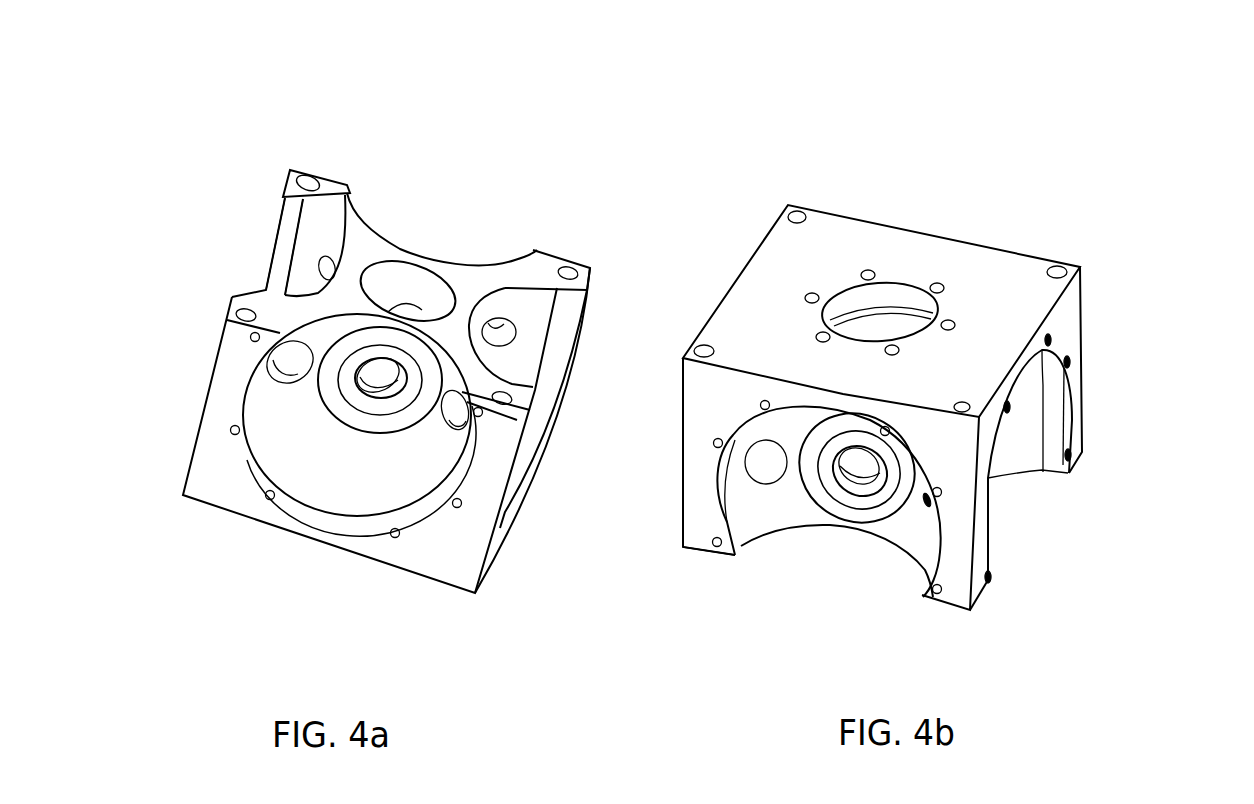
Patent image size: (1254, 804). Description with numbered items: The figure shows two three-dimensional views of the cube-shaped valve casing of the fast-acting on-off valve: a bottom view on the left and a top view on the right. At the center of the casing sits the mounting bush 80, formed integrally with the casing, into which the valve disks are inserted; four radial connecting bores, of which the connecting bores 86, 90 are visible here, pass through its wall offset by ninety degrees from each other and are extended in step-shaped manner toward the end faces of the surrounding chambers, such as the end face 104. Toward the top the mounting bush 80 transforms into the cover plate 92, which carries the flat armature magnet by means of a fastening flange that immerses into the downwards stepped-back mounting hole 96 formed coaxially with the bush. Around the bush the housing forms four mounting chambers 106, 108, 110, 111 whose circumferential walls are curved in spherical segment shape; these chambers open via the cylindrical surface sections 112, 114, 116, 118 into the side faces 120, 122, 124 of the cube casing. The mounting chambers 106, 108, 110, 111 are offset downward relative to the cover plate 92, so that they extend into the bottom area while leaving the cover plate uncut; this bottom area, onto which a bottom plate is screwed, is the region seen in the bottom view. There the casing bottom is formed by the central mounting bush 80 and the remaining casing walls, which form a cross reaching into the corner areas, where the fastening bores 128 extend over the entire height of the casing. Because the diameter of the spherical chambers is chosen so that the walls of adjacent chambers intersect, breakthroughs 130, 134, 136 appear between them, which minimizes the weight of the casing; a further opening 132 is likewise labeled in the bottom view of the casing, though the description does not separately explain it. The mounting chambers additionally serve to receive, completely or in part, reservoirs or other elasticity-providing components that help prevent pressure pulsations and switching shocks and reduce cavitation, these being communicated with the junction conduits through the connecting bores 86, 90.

In FIG. 4a, the mounting bush 80 is at (440, 267).
In FIG. 4b, the connecting bore 86 is at (867, 488).
In FIG. 4a, the connecting bore 90 is at (372, 395).
In FIG. 4b, the cover plate 92 is at (988, 280).
In FIG. 4b, the mounting hole 96 is at (887, 293).
In FIG. 4b, the end face 104 is at (827, 500).
In FIG. 4a, the mounting chamber 106 is at (436, 222).
In FIG. 4b, the mounting chamber 106 is at (834, 556).
In FIG. 4a, the mounting chamber 108 is at (534, 333).
In FIG. 4b, the mounting chamber 108 is at (1022, 463).
In FIG. 4a, the mounting chamber 110 is at (305, 425).
In FIG. 4a, the mounting chamber 111 is at (298, 272).
In FIG. 4b, the cylindrical surface section 112 is at (712, 522).
In FIG. 4b, the cylindrical surface section 114 is at (1058, 430).
In FIG. 4a, the cylindrical surface section 116 is at (350, 517).
In FIG. 4a, the cylindrical surface section 118 is at (288, 230).
In FIG. 4b, the side face 120 is at (702, 466).
In FIG. 4b, the side face 122 is at (1065, 313).
In FIG. 4b, the side face 124 is at (847, 228).
In FIG. 4a, the fastening bore 128 is at (299, 170).
In FIG. 4b, the fastening bore 128 is at (795, 210).
In FIG. 4a, the breakthrough 130 is at (333, 257).
In FIG. 4b, the breakthrough 130 is at (762, 480).
In FIG. 4a, the opening 132 is at (497, 322).
In FIG. 4a, the breakthrough 134 is at (441, 420).
In FIG. 4b, the breakthrough 134 is at (1012, 407).
In FIG. 4a, the breakthrough 136 is at (283, 366).